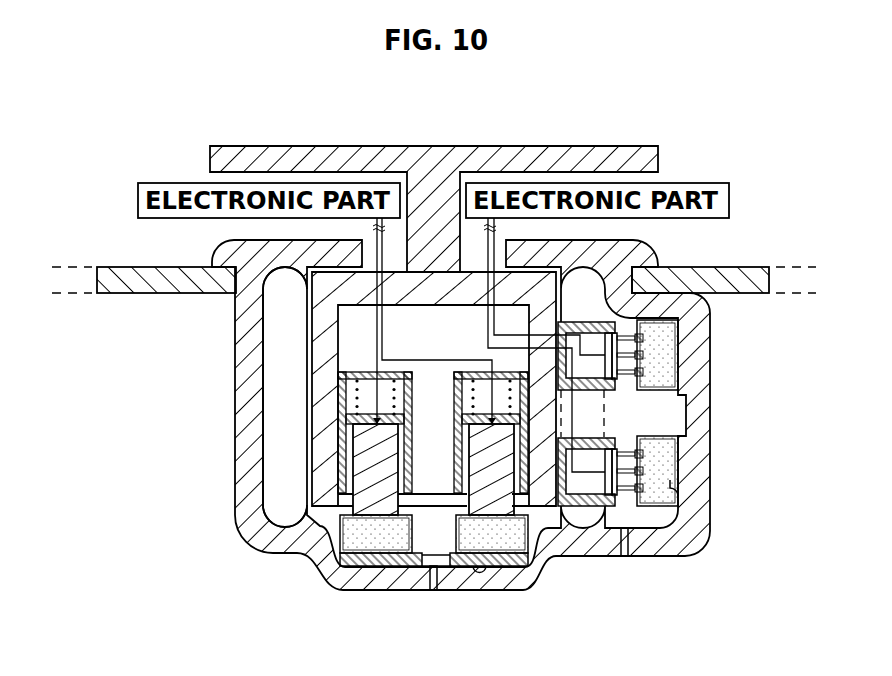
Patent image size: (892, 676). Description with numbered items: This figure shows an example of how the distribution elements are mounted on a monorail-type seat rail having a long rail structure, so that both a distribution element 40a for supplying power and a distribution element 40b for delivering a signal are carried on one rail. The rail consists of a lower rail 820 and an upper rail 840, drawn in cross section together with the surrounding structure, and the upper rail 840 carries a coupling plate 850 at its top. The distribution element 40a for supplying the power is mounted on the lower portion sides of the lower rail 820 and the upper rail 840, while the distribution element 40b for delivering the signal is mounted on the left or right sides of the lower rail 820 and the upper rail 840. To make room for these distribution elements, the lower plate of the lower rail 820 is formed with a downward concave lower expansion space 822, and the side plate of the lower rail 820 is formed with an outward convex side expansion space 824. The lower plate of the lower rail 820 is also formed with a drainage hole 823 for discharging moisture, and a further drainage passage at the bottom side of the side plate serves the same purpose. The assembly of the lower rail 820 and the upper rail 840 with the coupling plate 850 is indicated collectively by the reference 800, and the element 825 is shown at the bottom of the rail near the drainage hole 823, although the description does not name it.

The coupling plate 850 is at (312, 158).
The electromagnet module 800 is at (108, 303).
The lower rail 820 is at (248, 318).
The upper rail 840 is at (322, 353).
The distribution element for supplying the power 40a is at (316, 522).
The distribution element for delivering the signal 40b is at (702, 376).
The lower expansion space 822 is at (491, 568).
The drainage hole 823 is at (437, 578).
The side expansion space 824 is at (684, 504).
The fixing pin 825 is at (628, 553).